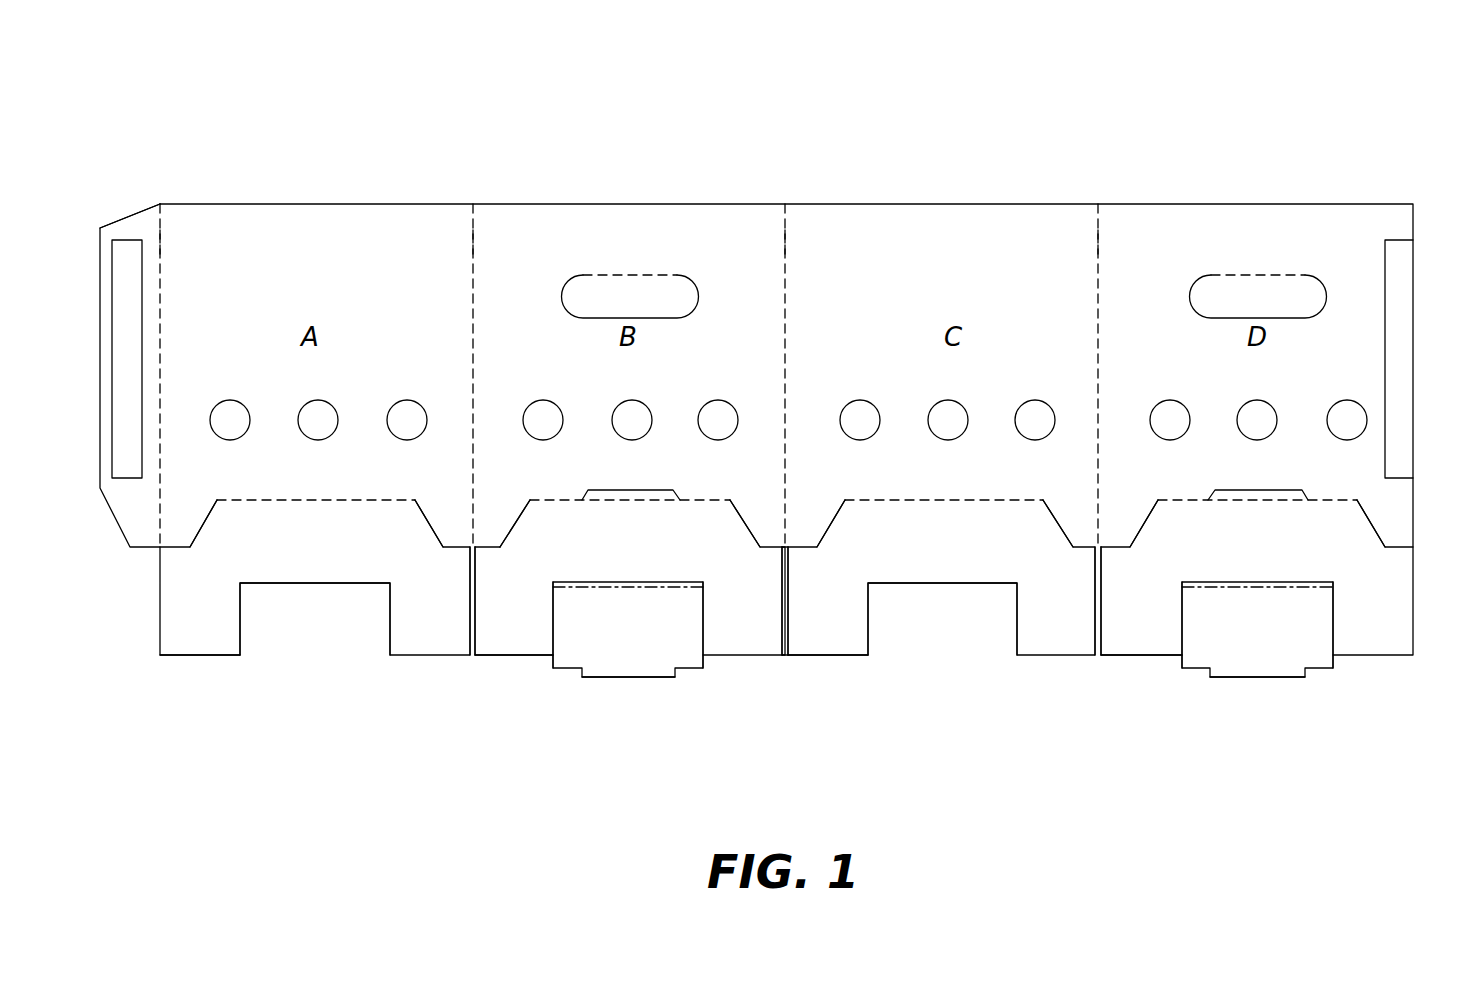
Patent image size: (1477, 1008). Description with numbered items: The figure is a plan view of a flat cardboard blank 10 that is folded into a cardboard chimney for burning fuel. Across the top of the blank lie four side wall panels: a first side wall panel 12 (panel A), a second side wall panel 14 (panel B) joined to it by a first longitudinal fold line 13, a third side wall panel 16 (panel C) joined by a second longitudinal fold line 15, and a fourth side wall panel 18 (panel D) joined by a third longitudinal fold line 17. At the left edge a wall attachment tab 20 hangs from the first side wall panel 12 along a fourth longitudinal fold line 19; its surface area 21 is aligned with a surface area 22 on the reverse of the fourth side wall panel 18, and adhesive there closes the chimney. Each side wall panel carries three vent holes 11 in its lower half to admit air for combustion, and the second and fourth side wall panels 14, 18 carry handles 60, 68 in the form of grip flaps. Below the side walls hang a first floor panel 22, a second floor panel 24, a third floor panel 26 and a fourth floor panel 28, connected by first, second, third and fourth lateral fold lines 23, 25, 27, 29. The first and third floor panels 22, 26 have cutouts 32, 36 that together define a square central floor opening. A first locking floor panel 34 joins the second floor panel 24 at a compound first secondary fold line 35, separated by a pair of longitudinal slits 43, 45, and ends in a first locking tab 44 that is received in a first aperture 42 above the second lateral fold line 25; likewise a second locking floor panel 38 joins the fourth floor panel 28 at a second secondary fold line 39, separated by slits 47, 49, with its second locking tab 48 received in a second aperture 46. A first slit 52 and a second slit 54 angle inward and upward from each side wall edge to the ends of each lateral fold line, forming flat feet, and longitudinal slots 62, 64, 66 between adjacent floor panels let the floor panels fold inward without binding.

The cardboard blank 10 is at (520, 128).
The holes 11 is at (1350, 400).
The first side wall panel 12 is at (292, 204).
The first longitudinal fold line 13 is at (476, 246).
The second side wall panel 14 is at (635, 204).
The second longitudinal fold line 15 is at (789, 246).
The third side wall panel 16 is at (957, 204).
The third longitudinal fold line 17 is at (1102, 246).
The fourth side wall panel 18 is at (1264, 204).
The fourth longitudinal fold line 19 is at (163, 246).
The wall attachment tab 20 is at (140, 212).
The surface area 21 is at (133, 325).
The surface area / first floor panel 22 is at (1403, 296).
The first lateral fold line 23 is at (344, 500).
The second floor panel 24 is at (519, 657).
The second lateral fold line 25 is at (699, 500).
The third floor panel 26 is at (834, 657).
The third lateral fold line 27 is at (973, 500).
The fourth floor panel 28 is at (1149, 657).
The fourth lateral fold line 29 is at (1326, 500).
The cutout 32 is at (322, 638).
The first locking floor panel 34 is at (658, 640).
The first secondary fold line 35 is at (630, 582).
The cutout 36 is at (949, 638).
The second locking floor panel 38 is at (1288, 640).
The second secondary fold line 39 is at (1259, 582).
The first aperture 42 is at (636, 490).
The longitudinal slit 43 is at (552, 614).
The first locking tab 44 is at (639, 678).
The longitudinal slit 45 is at (704, 614).
The second aperture 46 is at (1261, 490).
The longitudinal slit 47 is at (1181, 614).
The second locking tab 48 is at (1267, 678).
The longitudinal slit 49 is at (1334, 614).
The first slit 52 is at (208, 517).
The second slit 54 is at (428, 515).
The handle 60 is at (648, 262).
The longitudinal slot 62 is at (470, 622).
The longitudinal slot 64 is at (782, 622).
The longitudinal slot 66 is at (1095, 622).
The handle 68 is at (1274, 262).